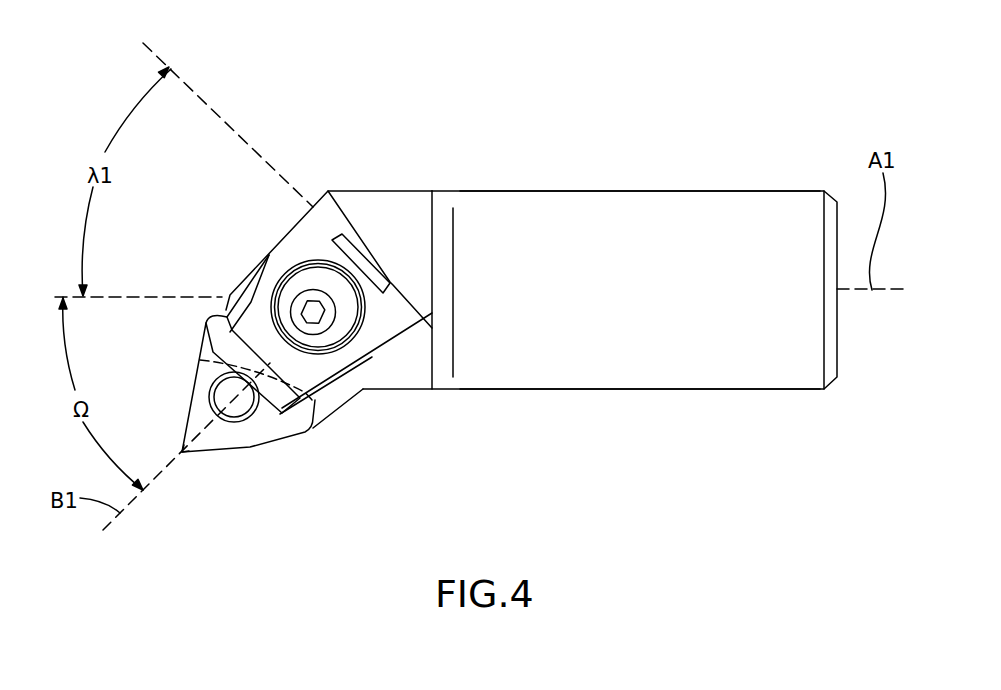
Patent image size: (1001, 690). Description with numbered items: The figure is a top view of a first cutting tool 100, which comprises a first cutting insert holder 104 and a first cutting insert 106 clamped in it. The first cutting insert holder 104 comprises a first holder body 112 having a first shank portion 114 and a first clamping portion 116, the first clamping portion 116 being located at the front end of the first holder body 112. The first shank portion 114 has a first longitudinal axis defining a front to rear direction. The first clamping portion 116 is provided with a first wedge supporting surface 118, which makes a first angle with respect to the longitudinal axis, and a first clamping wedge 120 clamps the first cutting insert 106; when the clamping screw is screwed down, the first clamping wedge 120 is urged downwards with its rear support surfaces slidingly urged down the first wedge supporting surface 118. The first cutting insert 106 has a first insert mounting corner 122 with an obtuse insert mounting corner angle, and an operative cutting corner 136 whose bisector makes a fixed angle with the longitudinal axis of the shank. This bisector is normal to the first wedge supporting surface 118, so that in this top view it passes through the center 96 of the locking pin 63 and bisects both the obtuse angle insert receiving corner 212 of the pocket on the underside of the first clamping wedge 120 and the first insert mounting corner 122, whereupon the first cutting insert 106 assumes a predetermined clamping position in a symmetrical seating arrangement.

The first cutting tool 100 is at (647, 63).
The first cutting insert holder 104 is at (507, 188).
The first holder body 112 is at (636, 218).
The first shank portion 114 is at (645, 358).
The first clamping portion 116 is at (219, 262).
The first wedge supporting surface 118 is at (415, 330).
The first clamping wedge 120 is at (292, 253).
The first insert mounting corner 122 is at (313, 432).
The first cutting insert 106 is at (233, 437).
The operative cutting corner 136 is at (182, 455).
The center of the locking pin 96 is at (209, 396).
The locking pin 63 is at (255, 410).
The obtuse angle insert receiving corner 212 is at (200, 360).